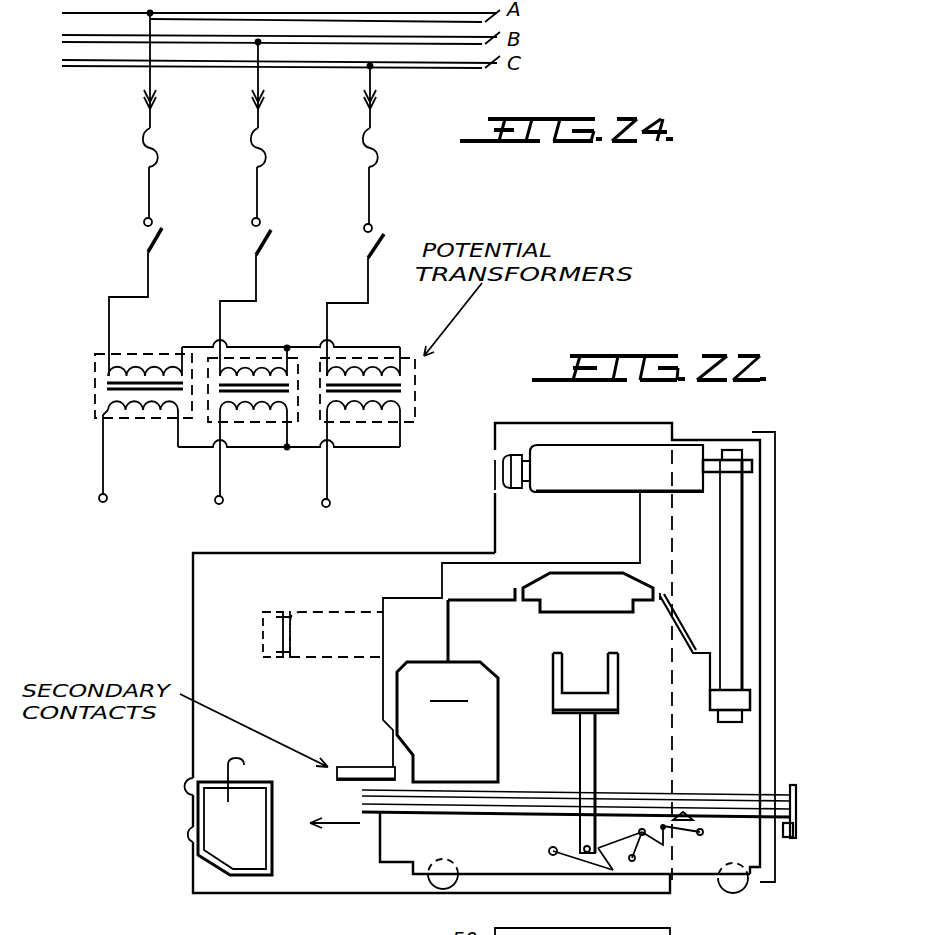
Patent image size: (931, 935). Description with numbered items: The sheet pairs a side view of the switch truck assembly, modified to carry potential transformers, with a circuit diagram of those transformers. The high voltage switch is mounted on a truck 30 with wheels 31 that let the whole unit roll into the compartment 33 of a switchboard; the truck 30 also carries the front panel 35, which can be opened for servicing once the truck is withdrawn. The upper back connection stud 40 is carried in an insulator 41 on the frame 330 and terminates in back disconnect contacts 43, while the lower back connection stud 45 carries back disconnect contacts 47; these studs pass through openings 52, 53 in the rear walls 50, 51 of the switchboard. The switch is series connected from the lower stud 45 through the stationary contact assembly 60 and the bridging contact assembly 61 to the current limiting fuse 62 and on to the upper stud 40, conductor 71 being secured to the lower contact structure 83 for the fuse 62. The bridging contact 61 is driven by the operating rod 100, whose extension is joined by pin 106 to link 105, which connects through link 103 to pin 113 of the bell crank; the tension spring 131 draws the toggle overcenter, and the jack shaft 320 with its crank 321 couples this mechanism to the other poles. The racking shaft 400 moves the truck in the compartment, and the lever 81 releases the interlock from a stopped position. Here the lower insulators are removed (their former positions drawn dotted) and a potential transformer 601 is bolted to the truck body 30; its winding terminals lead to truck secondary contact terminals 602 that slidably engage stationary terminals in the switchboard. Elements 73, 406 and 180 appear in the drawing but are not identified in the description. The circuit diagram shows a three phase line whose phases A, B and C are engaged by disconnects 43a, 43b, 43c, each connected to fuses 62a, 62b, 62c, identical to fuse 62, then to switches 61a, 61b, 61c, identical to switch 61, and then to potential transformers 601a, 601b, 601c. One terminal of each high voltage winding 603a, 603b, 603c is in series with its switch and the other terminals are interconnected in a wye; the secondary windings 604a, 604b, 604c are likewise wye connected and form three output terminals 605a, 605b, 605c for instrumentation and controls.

In FIG. 24, the disconnect contact 43a is at (141, 98).
In FIG. 24, the disconnect contact 43b is at (250, 98).
In FIG. 24, the disconnect contact 43c is at (362, 98).
In FIG. 24, the fuse 62a is at (136, 153).
In FIG. 24, the fuse 62b is at (246, 153).
In FIG. 24, the fuse 62c is at (358, 153).
In FIG. 24, the switch 61a is at (142, 243).
In FIG. 24, the switch 61b is at (253, 243).
In FIG. 24, the switch 61c is at (365, 244).
In FIG. 24, the potential transformer 601a is at (111, 409).
In FIG. 24, the potential transformer 601b is at (269, 389).
In FIG. 24, the potential transformer 601c is at (406, 410).
In FIG. 24, the high voltage winding 603a is at (140, 368).
In FIG. 24, the high voltage winding 603b is at (251, 369).
In FIG. 24, the high voltage winding 603c is at (364, 370).
In FIG. 24, the secondary winding 604a is at (142, 410).
In FIG. 24, the secondary winding 604b is at (262, 414).
In FIG. 24, the secondary winding 604c is at (368, 418).
In FIG. 24, the output terminal 605a is at (99, 501).
In FIG. 24, the output terminal 605b is at (215, 503).
In FIG. 24, the output terminal 605c is at (322, 507).
In FIG. 22, the opening 53 is at (194, 632).
In FIG. 22, the rear wall 50 is at (495, 520).
In FIG. 22, the insulator 41 is at (578, 494).
In FIG. 22, the back disconnect contacts 43 is at (512, 490).
In FIG. 22, the upper back connection stud 40 is at (528, 457).
In FIG. 22, the opening 52 is at (499, 458).
In FIG. 22, the stationary contact assembly 60 is at (588, 560).
In FIG. 22, the frame 330 is at (653, 524).
In FIG. 22, the conductor 71 is at (692, 656).
In FIG. 22, the rod 73 is at (756, 470).
In FIG. 22, the current limiting fuse 62 is at (746, 581).
In FIG. 22, the lower contact structure 83 is at (732, 690).
In FIG. 22, the front panel 35 is at (776, 707).
In FIG. 22, the bridging contact assembly 61 is at (614, 668).
In FIG. 22, the operating rod 100 is at (588, 768).
In FIG. 22, the truck 30 is at (562, 756).
In FIG. 22, the potential transformer 601 is at (0, 0).
In FIG. 22, the truck secondary contact terminals 602 is at (377, 742).
In FIG. 22, the back disconnect contacts 47 is at (281, 590).
In FIG. 22, the cable 406 is at (366, 592).
In FIG. 22, the lower back connection stud 45 is at (287, 654).
In FIG. 22, the rear wall 51 is at (193, 742).
In FIG. 22, the racking shaft 400 is at (565, 843).
In FIG. 22, the end plate 180 is at (776, 797).
In FIG. 22, the lever 81 is at (797, 831).
In FIG. 22, the wheels 31 is at (449, 863).
In FIG. 22, the jack shaft 320 is at (555, 847).
In FIG. 22, the crank 321 is at (550, 855).
In FIG. 22, the pin 106 is at (608, 856).
In FIG. 22, the link 105 is at (605, 866).
In FIG. 22, the pin 113 is at (660, 856).
In FIG. 22, the tension spring 131 is at (676, 815).
In FIG. 22, the link 103 is at (632, 860).
In FIG. 22, the compartment 33 is at (318, 876).